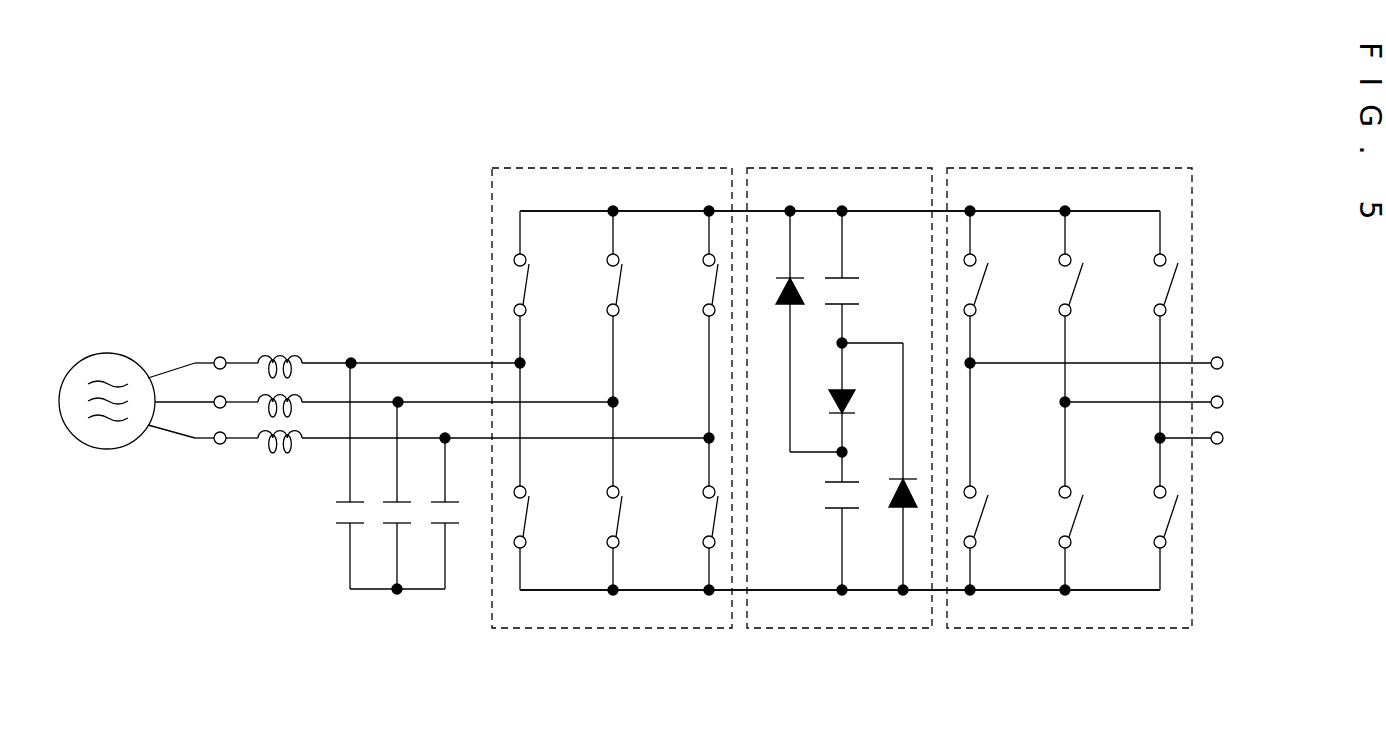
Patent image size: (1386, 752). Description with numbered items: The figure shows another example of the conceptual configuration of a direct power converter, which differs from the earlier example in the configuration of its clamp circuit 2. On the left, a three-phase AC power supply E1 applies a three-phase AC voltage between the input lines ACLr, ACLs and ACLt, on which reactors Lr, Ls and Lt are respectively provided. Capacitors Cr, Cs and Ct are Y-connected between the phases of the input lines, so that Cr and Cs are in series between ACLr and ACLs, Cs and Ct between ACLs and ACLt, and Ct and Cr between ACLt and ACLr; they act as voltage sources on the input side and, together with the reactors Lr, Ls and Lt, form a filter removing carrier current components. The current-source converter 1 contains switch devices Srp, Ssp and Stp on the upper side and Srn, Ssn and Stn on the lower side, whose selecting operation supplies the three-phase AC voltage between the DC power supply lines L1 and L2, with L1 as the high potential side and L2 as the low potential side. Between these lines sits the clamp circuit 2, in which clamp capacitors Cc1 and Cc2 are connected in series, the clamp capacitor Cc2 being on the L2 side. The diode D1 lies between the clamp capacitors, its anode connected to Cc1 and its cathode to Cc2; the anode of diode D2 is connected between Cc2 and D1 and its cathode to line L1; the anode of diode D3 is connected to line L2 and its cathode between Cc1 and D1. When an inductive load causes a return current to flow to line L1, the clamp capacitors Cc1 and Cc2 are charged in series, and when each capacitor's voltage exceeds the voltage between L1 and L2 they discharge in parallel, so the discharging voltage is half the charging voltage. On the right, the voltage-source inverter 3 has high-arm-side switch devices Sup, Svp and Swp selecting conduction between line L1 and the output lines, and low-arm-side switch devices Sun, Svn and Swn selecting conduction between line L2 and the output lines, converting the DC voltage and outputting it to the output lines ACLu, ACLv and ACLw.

The current-source converter 1 is at (826, 364).
The clamp circuit 2 is at (847, 364).
The voltage-source inverter 3 is at (1069, 364).
The power supply E1 is at (102, 352).
The reactor Lr is at (262, 350).
The reactor Ls is at (307, 392).
The reactor Lt is at (268, 450).
The capacitor Cr is at (341, 527).
The capacitor Cs is at (388, 528).
The capacitor Ct is at (435, 528).
The input line ACLr is at (366, 360).
The input line ACLs is at (419, 398).
The input line ACLt is at (470, 436).
The switch device Srp is at (530, 284).
The switch device Ssp is at (623, 284).
The switch device Stp is at (702, 283).
The switch device Srn is at (528, 520).
The switch device Ssn is at (623, 516).
The switch device Stn is at (702, 517).
The DC power supply line L1 is at (739, 590).
The DC power supply line L2 is at (739, 590).
The clamp capacitor Cc1 is at (850, 276).
The clamp capacitor Cc2 is at (828, 496).
The diode D1 is at (852, 400).
The diode D2 is at (782, 304).
The diode D3 is at (890, 496).
The high-arm-side switch device Sup is at (985, 284).
The high-arm-side switch device Svp is at (1080, 284).
The high-arm-side switch device Swp is at (1152, 285).
The low-arm-side switch device Sun is at (983, 516).
The low-arm-side switch device Svn is at (1078, 516).
The low-arm-side switch device Swn is at (1152, 517).
The output line ACLu is at (1200, 358).
The output line ACLv is at (1210, 398).
The output line ACLw is at (1202, 442).